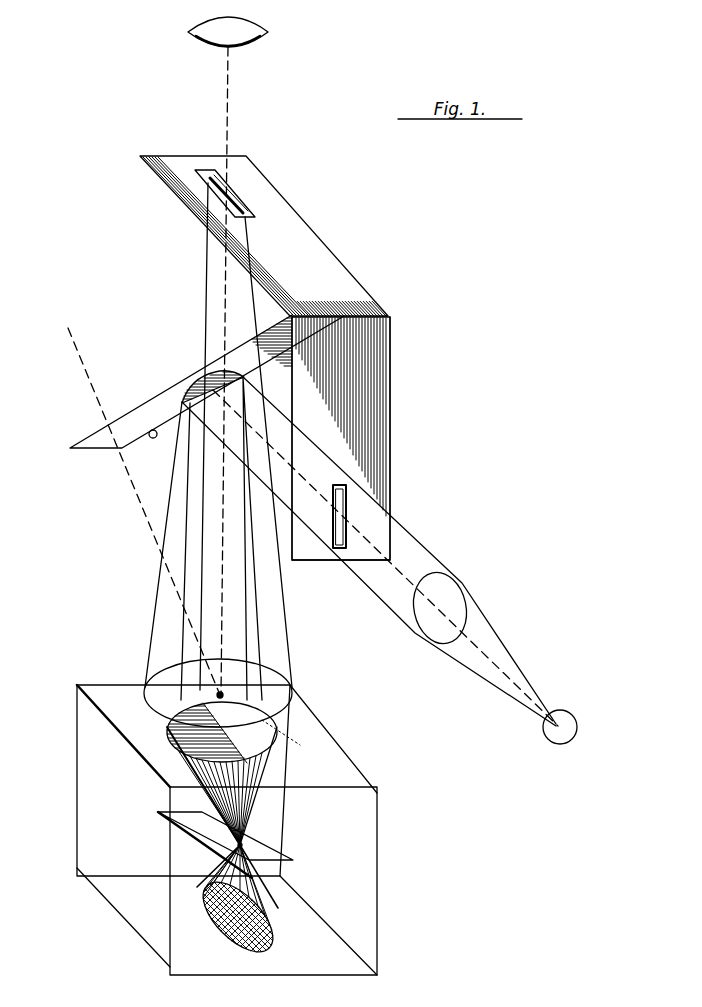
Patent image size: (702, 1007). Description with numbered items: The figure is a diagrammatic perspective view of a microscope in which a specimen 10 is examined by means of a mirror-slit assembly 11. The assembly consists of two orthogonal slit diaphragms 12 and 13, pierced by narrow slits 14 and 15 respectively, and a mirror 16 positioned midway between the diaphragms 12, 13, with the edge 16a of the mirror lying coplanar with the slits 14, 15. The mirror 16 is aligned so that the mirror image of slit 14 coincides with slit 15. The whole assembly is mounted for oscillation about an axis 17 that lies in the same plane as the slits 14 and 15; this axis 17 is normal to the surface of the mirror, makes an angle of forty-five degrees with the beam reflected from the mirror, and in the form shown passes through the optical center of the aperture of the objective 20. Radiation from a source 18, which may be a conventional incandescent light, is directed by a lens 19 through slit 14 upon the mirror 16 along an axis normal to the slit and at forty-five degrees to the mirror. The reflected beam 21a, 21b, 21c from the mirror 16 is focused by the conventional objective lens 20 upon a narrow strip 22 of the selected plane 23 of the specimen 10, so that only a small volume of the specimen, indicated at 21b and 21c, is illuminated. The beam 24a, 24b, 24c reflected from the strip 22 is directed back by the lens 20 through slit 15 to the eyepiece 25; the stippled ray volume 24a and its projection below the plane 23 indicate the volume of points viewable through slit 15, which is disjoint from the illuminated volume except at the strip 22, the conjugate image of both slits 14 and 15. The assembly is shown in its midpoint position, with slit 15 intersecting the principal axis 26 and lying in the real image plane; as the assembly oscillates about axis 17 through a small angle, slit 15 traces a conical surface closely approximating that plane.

The specimen 10 is at (378, 860).
The mirror-slit assembly 11 is at (398, 331).
The slit diaphragm 12 is at (390, 422).
The slit diaphragm 13 is at (305, 229).
The slit 14 is at (340, 548).
The slit 15 is at (207, 174).
The mirror 16 is at (178, 378).
The edge of the mirror 16a is at (150, 429).
The axis 17 is at (82, 362).
The source 18 is at (570, 712).
The lens 19 is at (463, 583).
The objective lens 20 is at (308, 694).
The reflected beam of radiation 21a is at (157, 590).
The reflected beam of radiation 21b is at (175, 742).
The reflected beam of radiation 21c is at (275, 915).
The strip 22 is at (247, 847).
The selected plane 23 is at (293, 860).
The beam of radiation 24a is at (275, 740).
The beam of radiation 24b is at (290, 620).
The beam of radiation 24c is at (206, 297).
The eyepiece 25 is at (262, 38).
The principal axis 26 is at (233, 100).